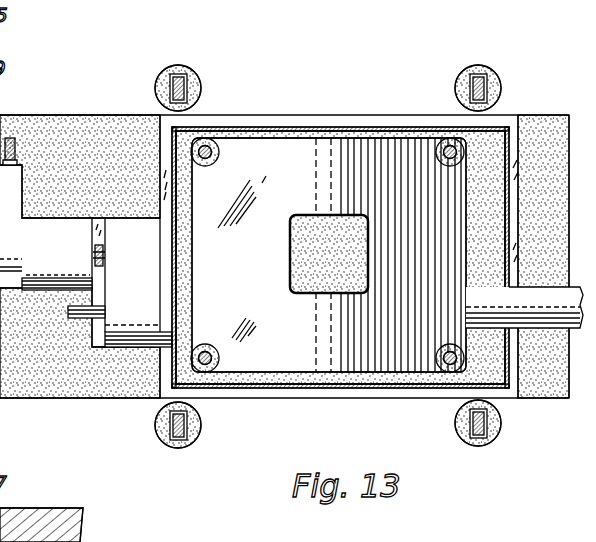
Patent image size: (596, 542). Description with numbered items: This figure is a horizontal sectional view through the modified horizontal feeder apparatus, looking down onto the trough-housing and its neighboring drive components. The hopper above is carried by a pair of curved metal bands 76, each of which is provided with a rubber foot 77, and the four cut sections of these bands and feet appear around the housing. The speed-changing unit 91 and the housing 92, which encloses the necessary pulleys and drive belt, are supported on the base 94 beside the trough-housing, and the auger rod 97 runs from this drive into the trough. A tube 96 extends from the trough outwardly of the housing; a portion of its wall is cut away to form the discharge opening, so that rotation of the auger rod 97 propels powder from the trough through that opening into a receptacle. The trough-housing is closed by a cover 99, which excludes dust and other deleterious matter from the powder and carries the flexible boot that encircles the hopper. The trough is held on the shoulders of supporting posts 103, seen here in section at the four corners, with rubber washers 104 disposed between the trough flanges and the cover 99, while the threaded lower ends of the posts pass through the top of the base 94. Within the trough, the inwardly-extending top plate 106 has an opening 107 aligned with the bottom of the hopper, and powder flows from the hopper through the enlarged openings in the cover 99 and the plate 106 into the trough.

The curved metal band 76 is at (156, 88).
The rubber foot 77 is at (196, 75).
The speed-changing unit 91 is at (62, 276).
The housing 92 is at (123, 329).
The base 94 is at (365, 106).
The tube 96 is at (546, 318).
The auger rod 97 is at (103, 312).
The cover 99 is at (285, 127).
The supporting post 103 is at (208, 146).
The rubber washer 104 is at (437, 152).
The top plate 106 is at (274, 372).
The opening 107 is at (313, 263).